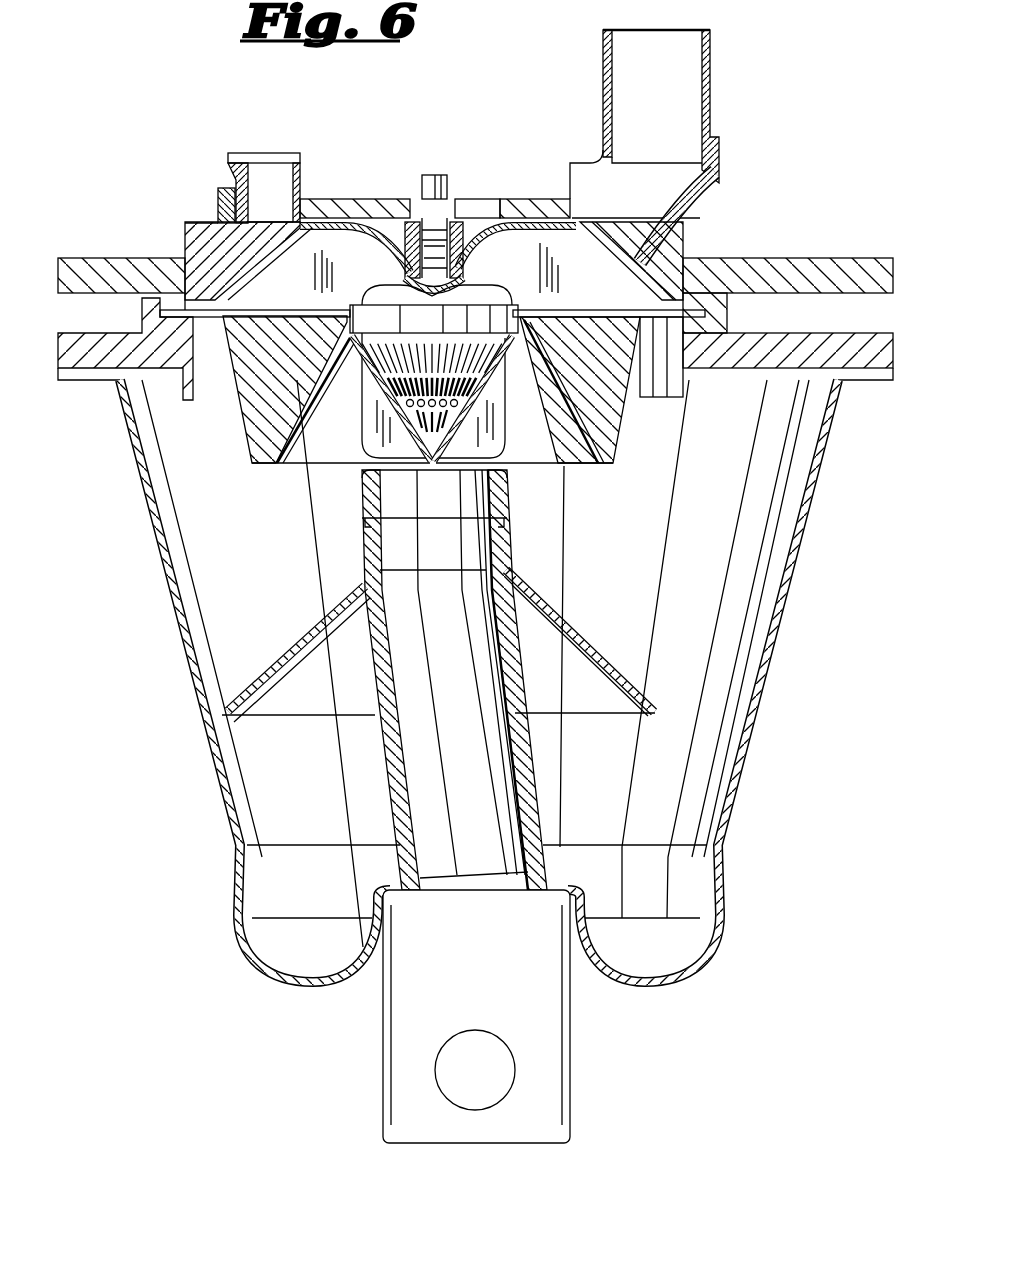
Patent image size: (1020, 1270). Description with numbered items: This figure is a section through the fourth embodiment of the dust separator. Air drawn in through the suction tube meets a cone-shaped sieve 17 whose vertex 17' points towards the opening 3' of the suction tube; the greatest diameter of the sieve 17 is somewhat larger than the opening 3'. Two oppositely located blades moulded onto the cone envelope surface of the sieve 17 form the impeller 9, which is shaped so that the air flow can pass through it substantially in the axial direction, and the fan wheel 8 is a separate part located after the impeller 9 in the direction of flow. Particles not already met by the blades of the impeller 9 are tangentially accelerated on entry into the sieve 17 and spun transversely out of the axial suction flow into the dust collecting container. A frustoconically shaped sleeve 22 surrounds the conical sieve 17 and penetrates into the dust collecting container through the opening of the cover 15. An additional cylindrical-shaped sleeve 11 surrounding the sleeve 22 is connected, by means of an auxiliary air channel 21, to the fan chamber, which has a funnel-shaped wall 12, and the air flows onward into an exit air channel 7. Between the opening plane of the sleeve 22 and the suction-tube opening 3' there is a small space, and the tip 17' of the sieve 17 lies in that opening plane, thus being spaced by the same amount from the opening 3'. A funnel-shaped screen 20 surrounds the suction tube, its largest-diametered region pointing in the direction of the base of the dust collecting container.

The exit air channel 7 is at (673, 80).
The fan wheel 8 is at (305, 258).
The impeller 9 is at (450, 412).
The cylindrical-shaped sleeve 11 is at (707, 297).
The funnel-shaped wall 12 is at (645, 245).
The cover 15 is at (777, 353).
The cone-shaped sieve 17 is at (288, 409).
The vertex of the sieve 17' is at (286, 530).
The funnel-shaped screen 20 is at (607, 673).
The auxiliary air channel 21 is at (648, 285).
The frustoconically shaped sleeve 22 is at (583, 435).
The opening of the suction tube 3' is at (312, 671).